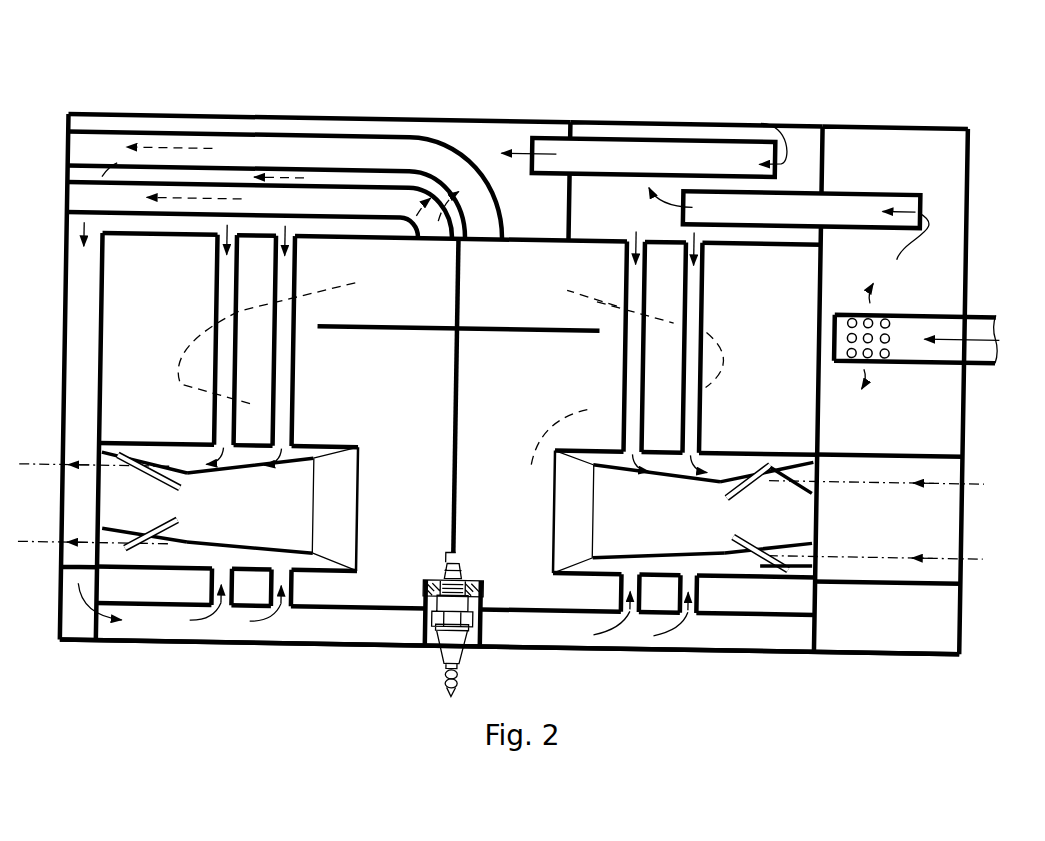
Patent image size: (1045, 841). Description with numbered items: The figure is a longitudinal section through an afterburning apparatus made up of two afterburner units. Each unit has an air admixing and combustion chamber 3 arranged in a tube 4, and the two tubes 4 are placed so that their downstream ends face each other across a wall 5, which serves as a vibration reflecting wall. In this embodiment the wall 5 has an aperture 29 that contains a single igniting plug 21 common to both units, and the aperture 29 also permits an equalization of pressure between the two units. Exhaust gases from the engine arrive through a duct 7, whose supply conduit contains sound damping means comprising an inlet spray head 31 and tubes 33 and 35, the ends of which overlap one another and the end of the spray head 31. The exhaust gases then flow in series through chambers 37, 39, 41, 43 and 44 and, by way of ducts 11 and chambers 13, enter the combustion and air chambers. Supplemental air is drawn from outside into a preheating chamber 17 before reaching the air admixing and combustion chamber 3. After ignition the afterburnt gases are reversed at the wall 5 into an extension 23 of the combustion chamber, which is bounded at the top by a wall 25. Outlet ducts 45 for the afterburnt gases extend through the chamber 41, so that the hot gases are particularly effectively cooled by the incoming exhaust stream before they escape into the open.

The air admixing and combustion chamber 3 is at (269, 530).
The tube 4 is at (263, 462).
The wall 5 is at (462, 366).
The duct 7 is at (919, 340).
The ducts 11 is at (637, 356).
The chambers 13 is at (788, 563).
The preheating chamber 17 is at (875, 528).
The igniting plug 21 is at (457, 642).
The extension 23 is at (740, 409).
The wall 25 is at (508, 321).
The aperture 29 is at (465, 546).
The inlet spray head 31 is at (911, 334).
The tube 33 is at (854, 192).
The tube 35 is at (621, 141).
The chamber 37 is at (961, 140).
The chamber 39 is at (798, 130).
The chamber 41 is at (455, 126).
The chamber 43 is at (84, 365).
The chamber 44 is at (299, 636).
The outlet ducts 45 is at (356, 192).